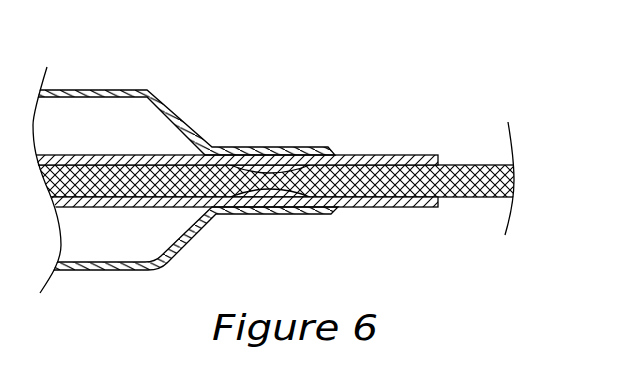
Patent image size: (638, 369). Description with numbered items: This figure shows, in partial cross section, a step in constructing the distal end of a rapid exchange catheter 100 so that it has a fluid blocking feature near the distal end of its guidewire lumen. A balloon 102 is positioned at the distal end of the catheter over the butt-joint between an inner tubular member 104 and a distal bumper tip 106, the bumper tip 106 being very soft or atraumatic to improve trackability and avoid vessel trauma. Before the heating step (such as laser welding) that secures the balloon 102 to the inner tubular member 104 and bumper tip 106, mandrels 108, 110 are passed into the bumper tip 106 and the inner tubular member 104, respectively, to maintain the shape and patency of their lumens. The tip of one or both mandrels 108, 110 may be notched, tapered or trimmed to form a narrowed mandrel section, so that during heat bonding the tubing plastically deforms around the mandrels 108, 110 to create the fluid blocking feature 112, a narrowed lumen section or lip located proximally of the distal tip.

The catheter 100 is at (205, 54).
The balloon 102 is at (183, 120).
The inner tubular member 104 is at (173, 207).
The bumper tip 106 is at (368, 207).
The mandrel 108 is at (475, 200).
The mandrel 110 is at (110, 187).
The fluid blocking feature 112 is at (274, 132).